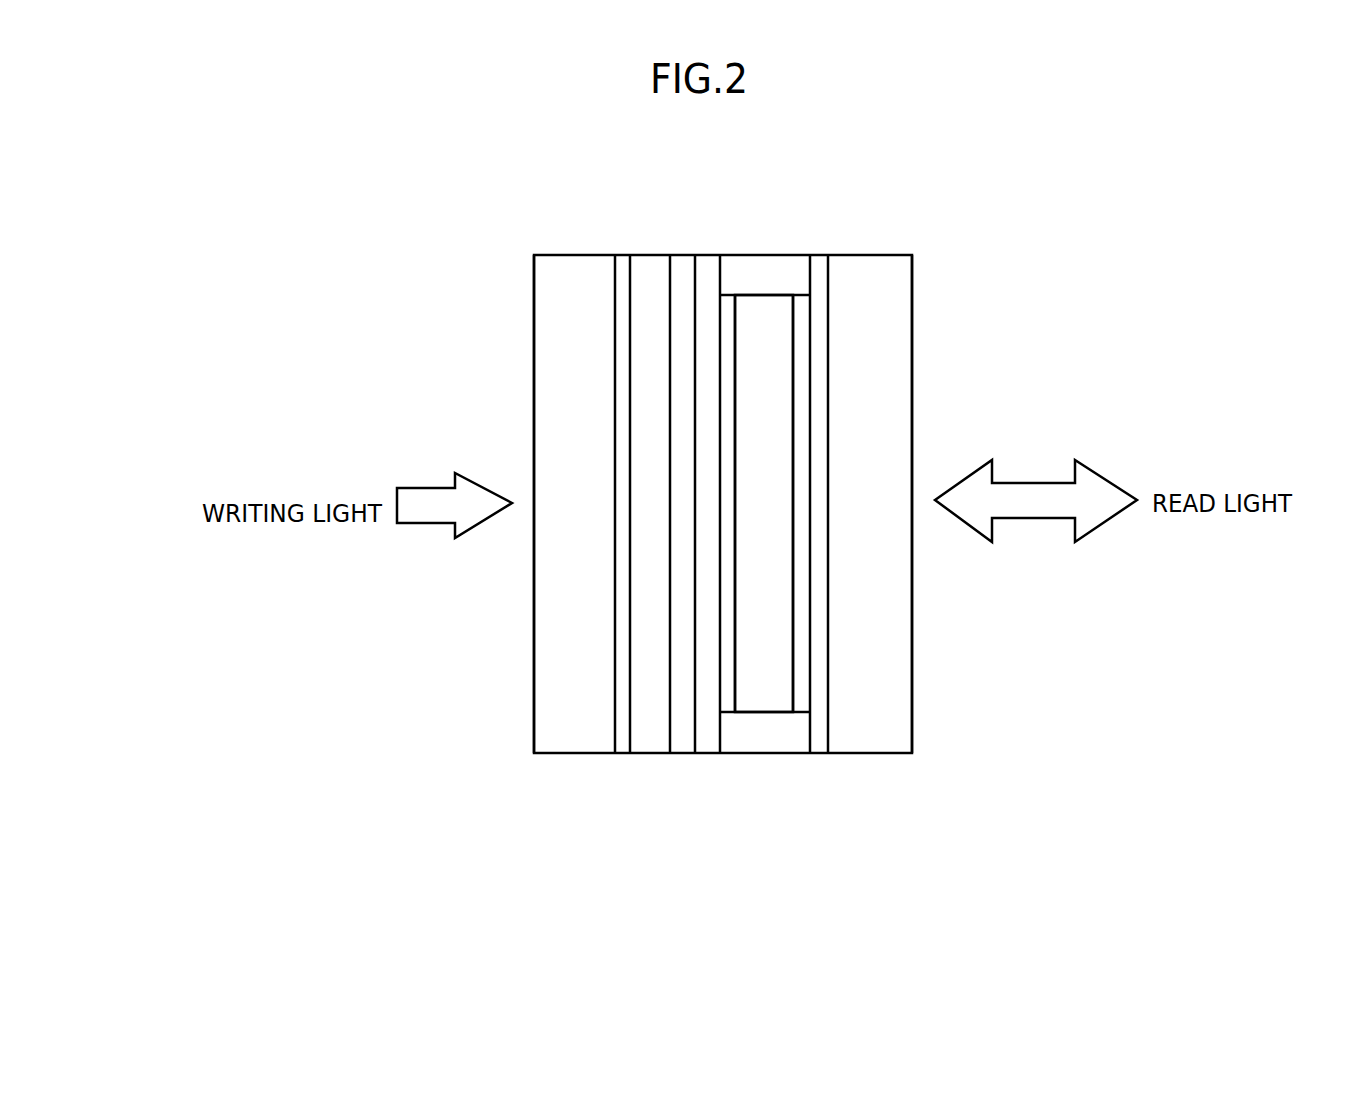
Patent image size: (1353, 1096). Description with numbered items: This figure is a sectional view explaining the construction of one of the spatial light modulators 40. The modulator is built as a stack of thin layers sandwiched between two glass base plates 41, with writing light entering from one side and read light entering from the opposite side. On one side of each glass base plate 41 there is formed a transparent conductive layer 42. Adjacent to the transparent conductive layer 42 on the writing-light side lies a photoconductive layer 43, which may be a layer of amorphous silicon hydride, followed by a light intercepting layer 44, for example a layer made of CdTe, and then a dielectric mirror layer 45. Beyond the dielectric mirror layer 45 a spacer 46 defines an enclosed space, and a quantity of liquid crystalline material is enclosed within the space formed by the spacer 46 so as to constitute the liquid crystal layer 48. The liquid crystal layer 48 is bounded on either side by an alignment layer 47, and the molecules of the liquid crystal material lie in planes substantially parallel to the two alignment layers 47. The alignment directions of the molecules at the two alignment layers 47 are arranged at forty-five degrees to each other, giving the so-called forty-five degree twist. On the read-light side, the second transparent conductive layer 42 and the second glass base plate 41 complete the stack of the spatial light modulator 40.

The spatial light modulator 40 is at (899, 237).
The glass base plate 41 is at (578, 263).
The transparent conductive layer 42 is at (838, 780).
The photoconductive layer 43 is at (652, 262).
The light intercepting layer 44 is at (687, 738).
The dielectric mirror layer 45 is at (708, 263).
The spacer 46 is at (790, 260).
The alignment layer 47 is at (803, 700).
The liquid crystal layer 48 is at (778, 348).